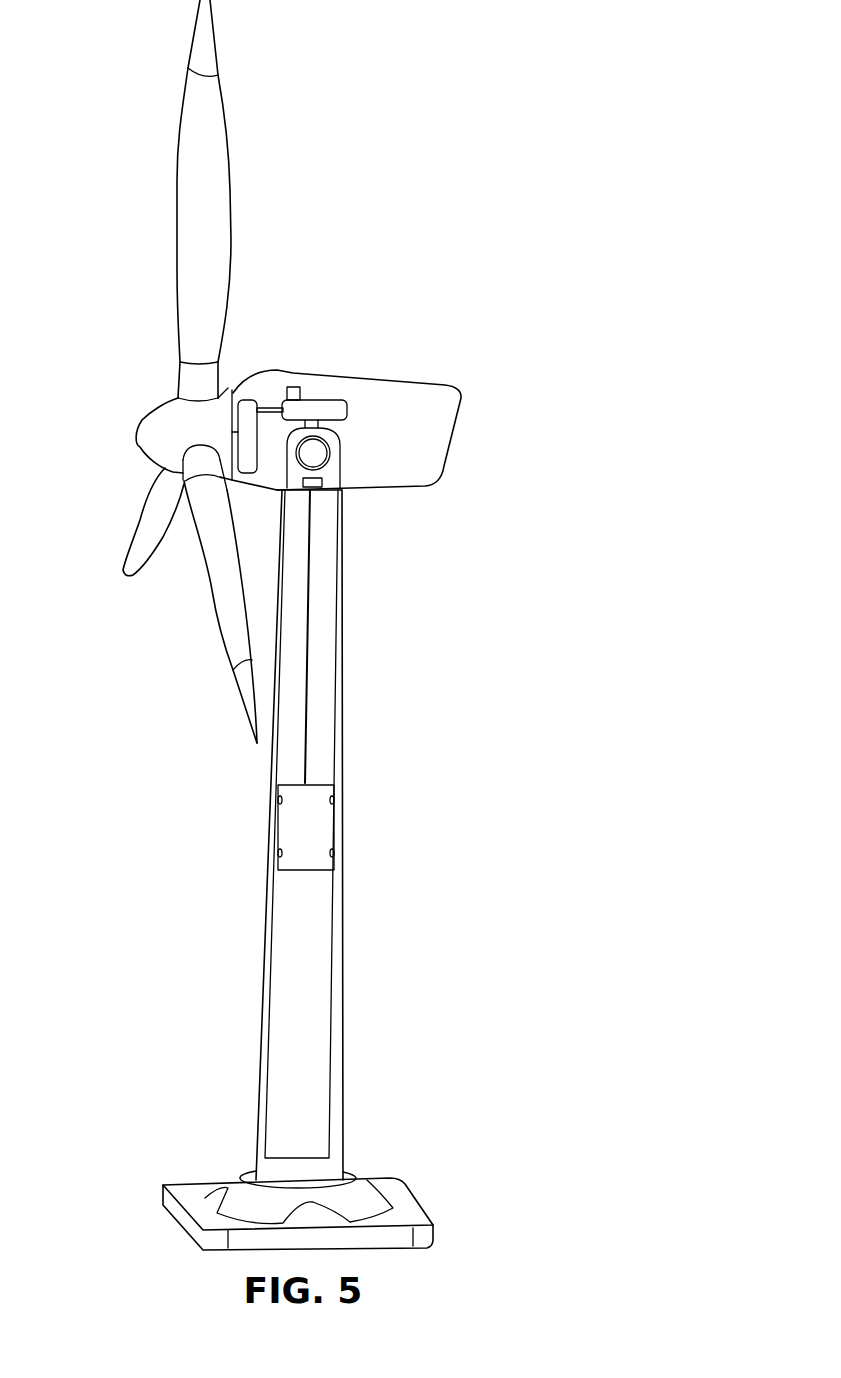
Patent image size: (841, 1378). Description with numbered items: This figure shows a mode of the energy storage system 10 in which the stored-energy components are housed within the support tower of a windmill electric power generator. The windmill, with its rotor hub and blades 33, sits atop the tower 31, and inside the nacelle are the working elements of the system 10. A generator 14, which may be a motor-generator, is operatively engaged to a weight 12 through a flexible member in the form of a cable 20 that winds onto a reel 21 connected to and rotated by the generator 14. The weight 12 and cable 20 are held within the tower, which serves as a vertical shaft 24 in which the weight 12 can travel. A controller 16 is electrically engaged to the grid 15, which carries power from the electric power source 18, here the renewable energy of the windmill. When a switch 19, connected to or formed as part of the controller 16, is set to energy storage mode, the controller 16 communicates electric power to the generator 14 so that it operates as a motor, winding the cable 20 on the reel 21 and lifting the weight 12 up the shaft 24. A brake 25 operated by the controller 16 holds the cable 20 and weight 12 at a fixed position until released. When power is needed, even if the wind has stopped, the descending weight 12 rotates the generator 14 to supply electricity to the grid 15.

The system 10 is at (421, 303).
The weight 12 is at (332, 832).
The generator 14 is at (338, 460).
The grid 15 is at (260, 409).
The controller 16 is at (317, 402).
The electric power source 18 is at (250, 399).
The switch 19 is at (295, 388).
The cable 20 is at (305, 740).
The reel 21 is at (333, 477).
The vertical shaft 24 is at (322, 992).
The brake 25 is at (287, 475).
The tower 31 is at (345, 1035).
The rotor hub 33 is at (138, 422).